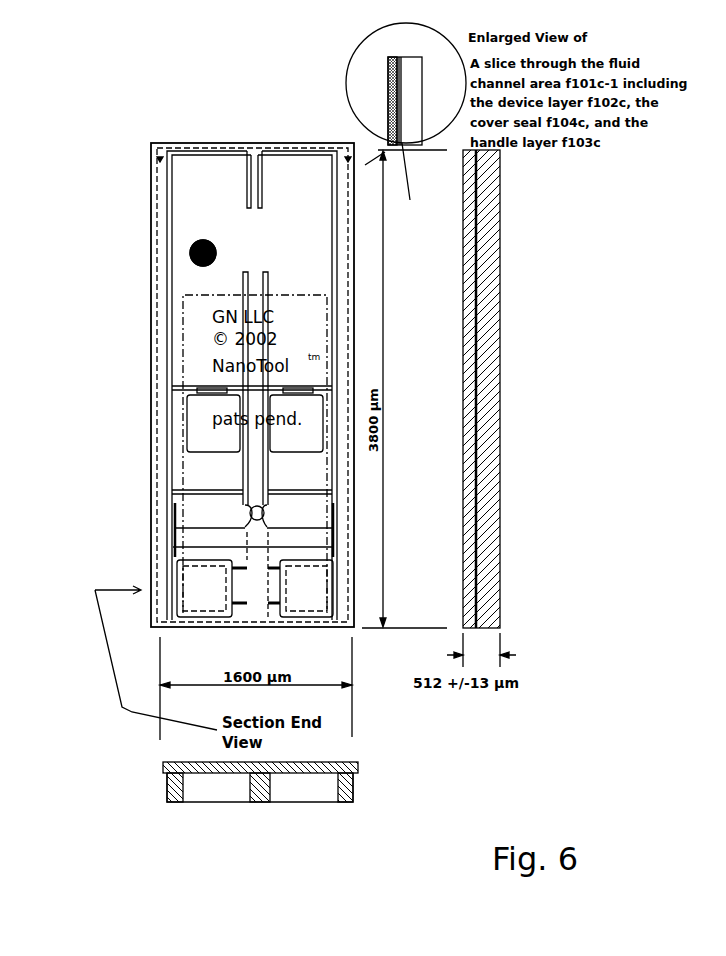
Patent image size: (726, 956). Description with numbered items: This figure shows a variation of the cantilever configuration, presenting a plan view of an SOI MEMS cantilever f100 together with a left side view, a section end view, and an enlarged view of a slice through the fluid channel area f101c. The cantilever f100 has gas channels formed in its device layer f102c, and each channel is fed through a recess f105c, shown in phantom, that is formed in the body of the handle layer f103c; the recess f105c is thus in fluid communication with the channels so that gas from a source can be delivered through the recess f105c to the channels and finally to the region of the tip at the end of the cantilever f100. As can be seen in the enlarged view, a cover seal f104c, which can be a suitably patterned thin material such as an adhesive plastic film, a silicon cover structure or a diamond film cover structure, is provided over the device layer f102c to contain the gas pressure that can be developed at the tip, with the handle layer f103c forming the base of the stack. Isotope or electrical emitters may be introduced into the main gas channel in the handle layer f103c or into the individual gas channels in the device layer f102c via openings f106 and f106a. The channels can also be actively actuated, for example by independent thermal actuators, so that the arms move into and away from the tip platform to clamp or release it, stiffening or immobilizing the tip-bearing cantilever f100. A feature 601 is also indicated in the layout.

The cantilever f100 is at (227, 385).
The fluid channel f101c is at (260, 143).
The device layer f102c is at (433, 214).
The handle layer f103c is at (216, 782).
The cover seal f104c is at (388, 112).
The recess f105c is at (203, 787).
The openings f106 is at (216, 553).
The openings f106a is at (252, 414).
The inlet port 601 is at (176, 258).